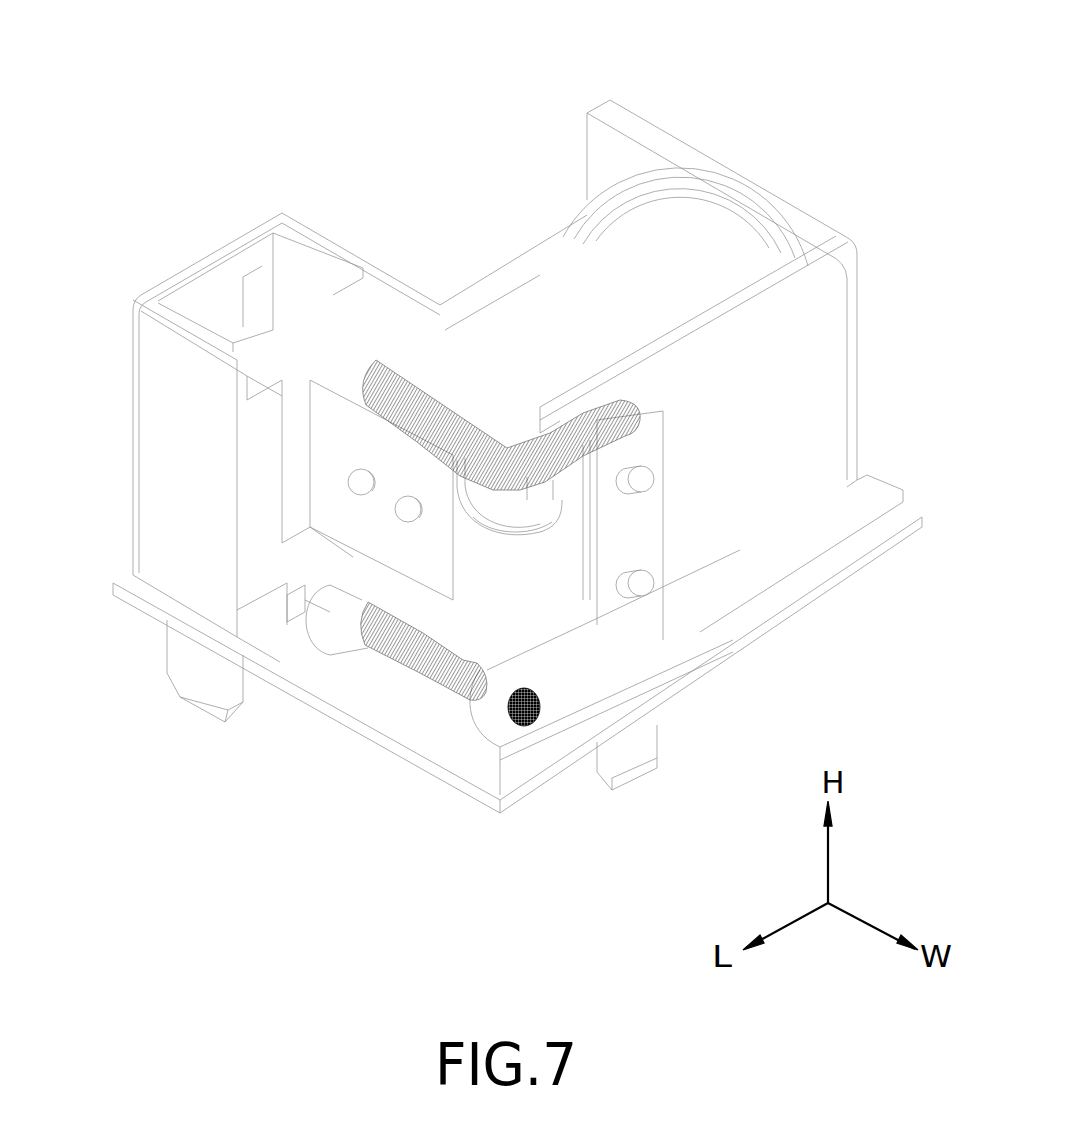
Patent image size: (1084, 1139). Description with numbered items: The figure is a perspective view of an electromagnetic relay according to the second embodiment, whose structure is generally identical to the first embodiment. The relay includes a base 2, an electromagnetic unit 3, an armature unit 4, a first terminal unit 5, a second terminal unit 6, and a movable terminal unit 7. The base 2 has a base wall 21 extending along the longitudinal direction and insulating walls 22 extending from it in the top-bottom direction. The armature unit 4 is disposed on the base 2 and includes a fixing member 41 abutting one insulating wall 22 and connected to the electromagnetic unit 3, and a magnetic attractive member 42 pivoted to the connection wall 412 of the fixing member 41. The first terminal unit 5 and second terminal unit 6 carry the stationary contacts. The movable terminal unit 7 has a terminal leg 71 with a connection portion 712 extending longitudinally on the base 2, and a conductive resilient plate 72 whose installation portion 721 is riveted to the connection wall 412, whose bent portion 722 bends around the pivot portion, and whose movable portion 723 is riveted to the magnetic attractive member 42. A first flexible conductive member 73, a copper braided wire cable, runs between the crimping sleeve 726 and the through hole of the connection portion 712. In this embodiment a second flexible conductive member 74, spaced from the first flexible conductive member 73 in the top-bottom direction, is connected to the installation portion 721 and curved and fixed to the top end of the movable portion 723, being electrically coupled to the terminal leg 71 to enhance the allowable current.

The base 2 is at (120, 518).
The base wall 21 is at (897, 540).
The insulating walls 22 is at (672, 182).
The electromagnetic unit 3 is at (624, 274).
The armature unit 4 is at (747, 350).
The fixing member 41 is at (820, 224).
The connection wall 412 is at (720, 340).
The magnetic attractive member 42 is at (488, 412).
The first terminal unit 5 is at (182, 720).
The second terminal unit 6 is at (258, 252).
The movable terminal unit 7 is at (462, 748).
The terminal leg 71 is at (597, 787).
The connection portion 712 is at (550, 715).
The conductive resilient plate 72 is at (752, 540).
The installation portion 721 is at (667, 472).
The bent portion 722 is at (525, 533).
The movable portion 723 is at (333, 430).
The crimping sleeve 726 is at (327, 630).
The first flexible conductive member 73 is at (412, 675).
The second flexible conductive member 74 is at (415, 400).